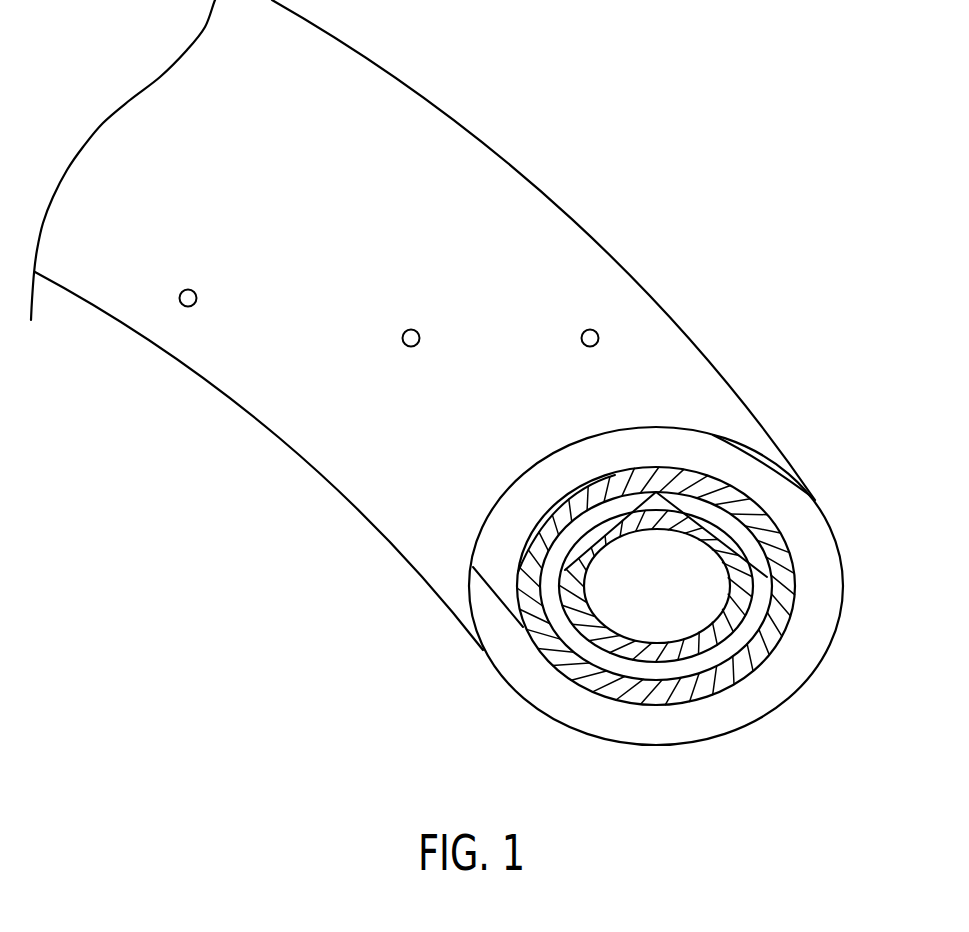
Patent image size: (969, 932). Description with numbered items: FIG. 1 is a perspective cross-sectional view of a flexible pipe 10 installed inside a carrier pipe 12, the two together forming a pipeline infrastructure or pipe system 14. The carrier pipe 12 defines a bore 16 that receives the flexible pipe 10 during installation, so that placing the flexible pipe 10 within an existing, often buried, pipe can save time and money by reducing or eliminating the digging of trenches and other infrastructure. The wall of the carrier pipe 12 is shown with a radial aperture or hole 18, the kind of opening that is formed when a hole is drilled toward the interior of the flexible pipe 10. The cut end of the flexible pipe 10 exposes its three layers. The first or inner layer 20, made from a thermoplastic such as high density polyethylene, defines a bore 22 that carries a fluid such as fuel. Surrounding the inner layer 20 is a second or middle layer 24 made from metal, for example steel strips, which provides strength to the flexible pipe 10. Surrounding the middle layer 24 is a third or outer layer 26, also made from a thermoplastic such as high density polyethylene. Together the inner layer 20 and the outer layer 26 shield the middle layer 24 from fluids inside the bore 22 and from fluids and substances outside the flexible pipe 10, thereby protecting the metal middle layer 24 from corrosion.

The flexible pipe 10 is at (550, 680).
The carrier pipe 12 is at (248, 437).
The pipe system 14 is at (830, 445).
The bore 16 is at (673, 725).
The hole 18 is at (189, 289).
The inner layer 20 is at (715, 635).
The bore 22 is at (668, 603).
The middle layer 24 is at (757, 612).
The outer layer 26 is at (640, 695).